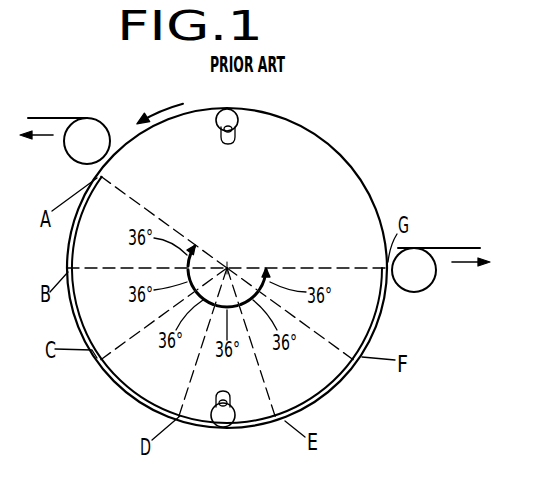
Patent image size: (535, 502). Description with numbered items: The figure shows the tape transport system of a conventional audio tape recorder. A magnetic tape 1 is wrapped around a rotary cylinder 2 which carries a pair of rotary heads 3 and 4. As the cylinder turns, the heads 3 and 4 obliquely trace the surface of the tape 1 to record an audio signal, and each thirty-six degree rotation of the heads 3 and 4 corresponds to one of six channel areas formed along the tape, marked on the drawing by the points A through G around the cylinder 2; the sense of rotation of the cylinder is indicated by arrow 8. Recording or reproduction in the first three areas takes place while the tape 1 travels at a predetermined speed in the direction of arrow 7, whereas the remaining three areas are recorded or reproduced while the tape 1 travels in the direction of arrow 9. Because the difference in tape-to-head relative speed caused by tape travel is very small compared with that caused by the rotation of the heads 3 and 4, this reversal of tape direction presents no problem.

The magnetic tape 1 is at (442, 247).
The rotary cylinder 2 is at (367, 203).
The rotary head 3 is at (238, 126).
The rotary head 4 is at (233, 407).
The arrow 7 is at (458, 264).
The drum rotation direction arrow 8 is at (157, 113).
The arrow 9 is at (44, 137).